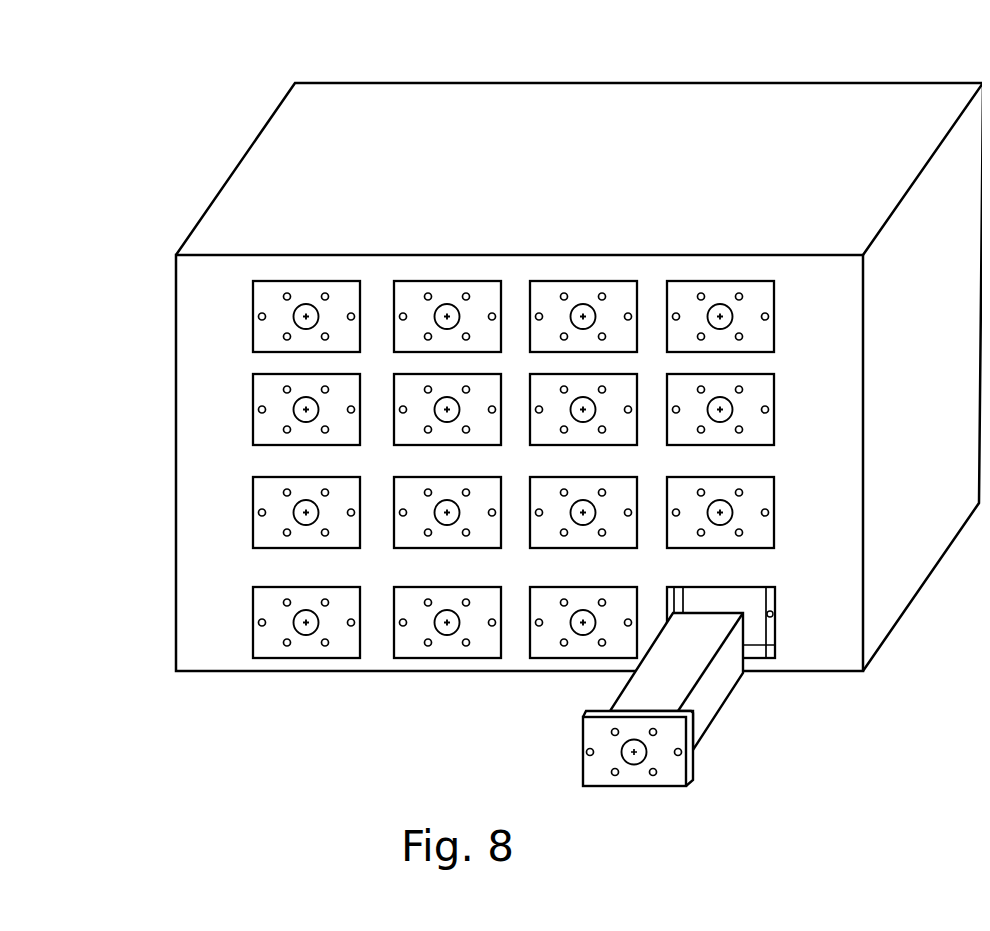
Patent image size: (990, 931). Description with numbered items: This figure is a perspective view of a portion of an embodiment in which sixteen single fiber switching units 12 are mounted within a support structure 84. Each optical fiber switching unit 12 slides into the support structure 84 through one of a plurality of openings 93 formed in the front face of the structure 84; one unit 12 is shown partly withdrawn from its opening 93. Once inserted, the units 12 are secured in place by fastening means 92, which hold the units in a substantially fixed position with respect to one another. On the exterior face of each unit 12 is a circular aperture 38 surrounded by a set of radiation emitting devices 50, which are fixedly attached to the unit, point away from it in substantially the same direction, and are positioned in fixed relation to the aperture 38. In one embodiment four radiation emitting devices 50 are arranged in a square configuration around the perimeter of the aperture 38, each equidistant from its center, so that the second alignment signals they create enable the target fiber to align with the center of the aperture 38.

The support structure 84 is at (531, 400).
The fastening means 92 is at (260, 505).
The aperture 38 is at (305, 633).
The radiation emitting devices 50 is at (426, 643).
The openings 93 is at (748, 626).
The optical fiber switching unit 12 is at (705, 700).